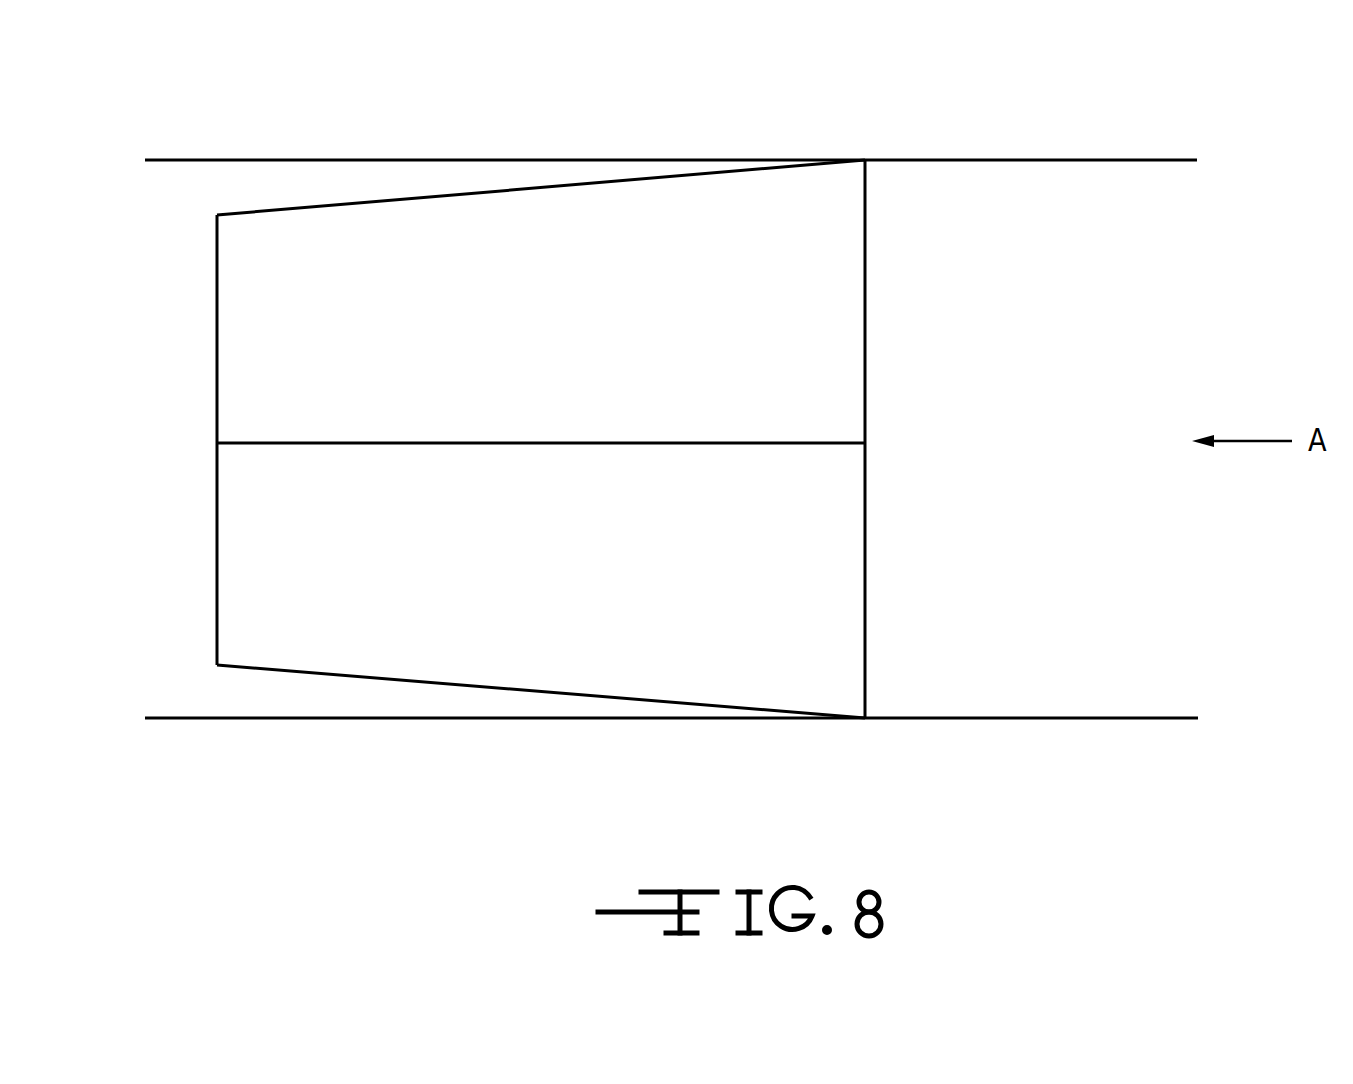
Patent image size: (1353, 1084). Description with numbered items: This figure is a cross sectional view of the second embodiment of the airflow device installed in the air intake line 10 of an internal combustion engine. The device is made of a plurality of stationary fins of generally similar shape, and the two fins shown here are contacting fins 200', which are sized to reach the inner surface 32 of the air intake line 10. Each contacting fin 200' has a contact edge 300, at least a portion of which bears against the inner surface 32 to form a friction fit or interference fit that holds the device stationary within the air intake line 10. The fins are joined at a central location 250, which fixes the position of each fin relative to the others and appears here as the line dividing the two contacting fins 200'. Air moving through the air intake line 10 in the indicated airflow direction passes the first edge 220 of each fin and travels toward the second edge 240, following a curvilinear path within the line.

The air intake line 10 is at (1023, 160).
The inner surface 32 is at (1055, 718).
The first edge 220 is at (865, 296).
The second edge 240 is at (217, 327).
The contact edge 300 is at (668, 176).
The central location 250 is at (587, 443).
The contacting fins 200' is at (541, 548).